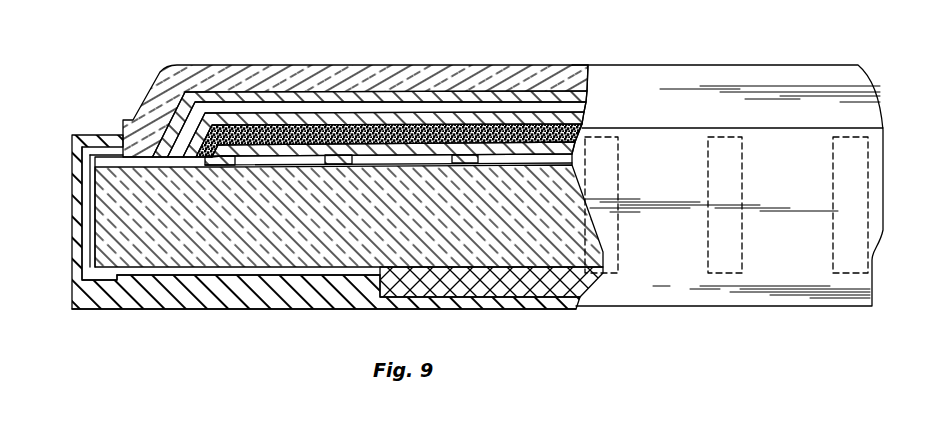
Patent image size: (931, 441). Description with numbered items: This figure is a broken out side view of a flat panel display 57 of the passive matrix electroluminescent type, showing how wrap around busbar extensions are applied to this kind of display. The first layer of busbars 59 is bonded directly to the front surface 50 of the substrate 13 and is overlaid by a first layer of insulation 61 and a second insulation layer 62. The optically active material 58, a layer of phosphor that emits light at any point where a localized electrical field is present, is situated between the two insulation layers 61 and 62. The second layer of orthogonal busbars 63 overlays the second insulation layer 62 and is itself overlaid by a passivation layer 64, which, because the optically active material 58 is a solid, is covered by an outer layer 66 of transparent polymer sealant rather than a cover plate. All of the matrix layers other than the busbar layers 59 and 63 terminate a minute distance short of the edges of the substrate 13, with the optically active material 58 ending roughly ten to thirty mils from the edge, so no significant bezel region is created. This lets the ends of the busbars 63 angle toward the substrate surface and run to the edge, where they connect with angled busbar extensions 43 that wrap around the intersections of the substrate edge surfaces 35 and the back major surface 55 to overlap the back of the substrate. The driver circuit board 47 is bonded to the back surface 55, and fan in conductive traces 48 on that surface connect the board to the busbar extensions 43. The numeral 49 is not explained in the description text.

The substrate 13 is at (233, 245).
The substrate edge surfaces 35 is at (88, 246).
The angled busbar extensions 43 is at (708, 167).
The driver circuit board 47 is at (500, 286).
The fan in conductive traces 48 is at (147, 280).
The housing base 49 is at (249, 300).
The front surface 50 is at (377, 152).
The back major surface 55 is at (221, 277).
The flat panel display 57 is at (126, 90).
The optically active material 58 is at (585, 128).
The first layer of busbars 59 is at (336, 160).
The first layer of insulation 61 is at (290, 150).
The second insulation layer 62 is at (300, 120).
The second layer of orthogonal busbars 63 is at (253, 108).
The passivation layer 64 is at (217, 99).
The outer layer of transparent polymer sealant 66 is at (497, 65).